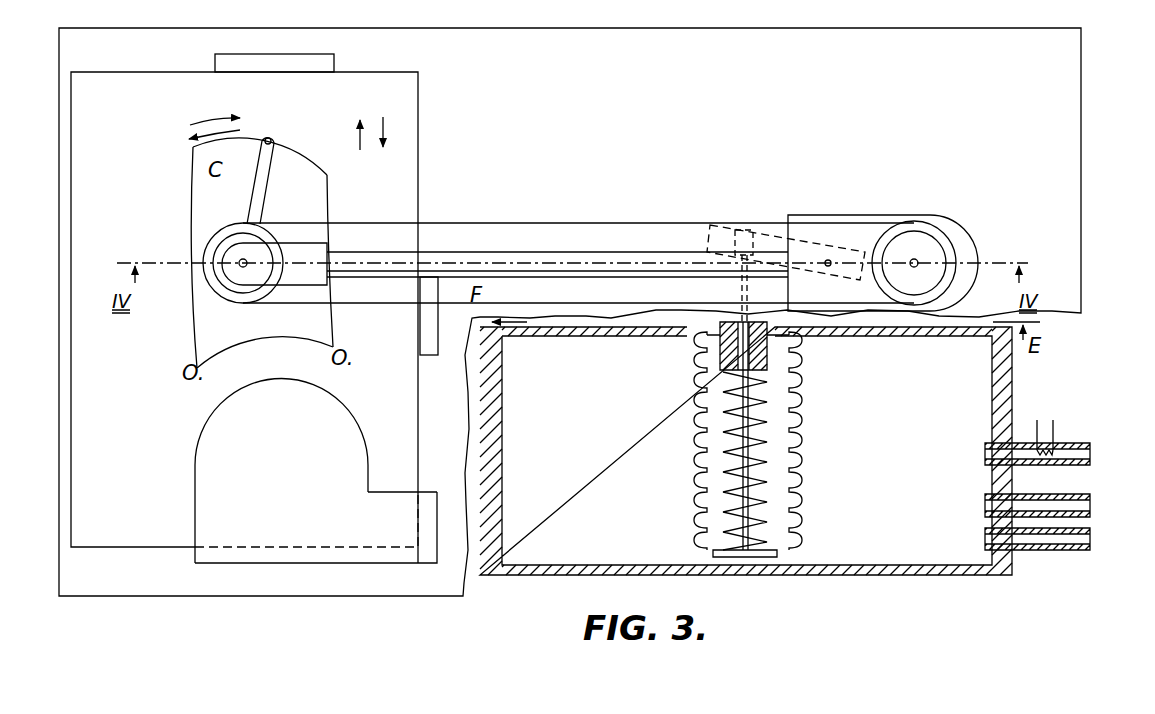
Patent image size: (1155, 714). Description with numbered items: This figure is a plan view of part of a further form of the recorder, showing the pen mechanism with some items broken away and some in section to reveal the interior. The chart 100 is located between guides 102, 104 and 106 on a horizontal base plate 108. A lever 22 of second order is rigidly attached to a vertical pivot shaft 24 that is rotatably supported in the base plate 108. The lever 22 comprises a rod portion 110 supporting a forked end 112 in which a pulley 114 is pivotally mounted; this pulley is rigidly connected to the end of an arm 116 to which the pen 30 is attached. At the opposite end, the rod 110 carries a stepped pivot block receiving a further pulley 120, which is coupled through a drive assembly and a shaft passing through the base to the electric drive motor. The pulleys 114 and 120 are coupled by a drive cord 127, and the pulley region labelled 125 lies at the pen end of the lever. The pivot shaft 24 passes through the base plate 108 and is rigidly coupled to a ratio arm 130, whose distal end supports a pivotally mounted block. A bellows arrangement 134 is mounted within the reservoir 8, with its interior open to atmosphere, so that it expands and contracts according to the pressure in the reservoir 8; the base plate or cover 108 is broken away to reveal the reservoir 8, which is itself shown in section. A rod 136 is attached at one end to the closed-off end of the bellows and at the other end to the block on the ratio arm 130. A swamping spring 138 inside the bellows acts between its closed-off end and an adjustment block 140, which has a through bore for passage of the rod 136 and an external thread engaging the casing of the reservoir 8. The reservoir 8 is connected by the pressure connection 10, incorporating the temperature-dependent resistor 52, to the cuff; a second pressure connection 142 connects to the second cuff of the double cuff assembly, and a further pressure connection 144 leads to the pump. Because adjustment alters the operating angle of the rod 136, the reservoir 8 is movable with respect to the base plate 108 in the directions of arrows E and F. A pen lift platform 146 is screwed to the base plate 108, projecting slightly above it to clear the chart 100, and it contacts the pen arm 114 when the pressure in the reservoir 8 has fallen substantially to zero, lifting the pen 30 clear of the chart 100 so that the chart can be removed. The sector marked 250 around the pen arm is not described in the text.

The reservoir 8 is at (908, 388).
The pressure connection 10 is at (985, 452).
The lever 22 is at (580, 208).
The pivot shaft 24 is at (828, 260).
The pen 30 is at (268, 138).
The temperature-dependent resistor 52 is at (1055, 452).
The chart 100 is at (158, 60).
The guide 102 is at (265, 57).
The guide 104 is at (193, 553).
The guide 106 is at (425, 319).
The base plate 108 is at (98, 577).
The rod portion 110 is at (477, 252).
The forked end 112 is at (312, 277).
The pulley 114 is at (273, 230).
The arm 116 is at (263, 175).
The pulley 120 is at (907, 227).
The pulley 125 is at (205, 273).
The drive cord 127 is at (395, 224).
The ratio arm 130 is at (707, 228).
The bellows arrangement 134 is at (705, 385).
The rod 136 is at (735, 311).
The swamping spring 138 is at (723, 415).
The adjustment block 140 is at (718, 352).
The second pressure connection 142 is at (985, 505).
The pressure connection 144 is at (985, 540).
The pen lift platform 146 is at (383, 492).
The sector 250 is at (266, 253).